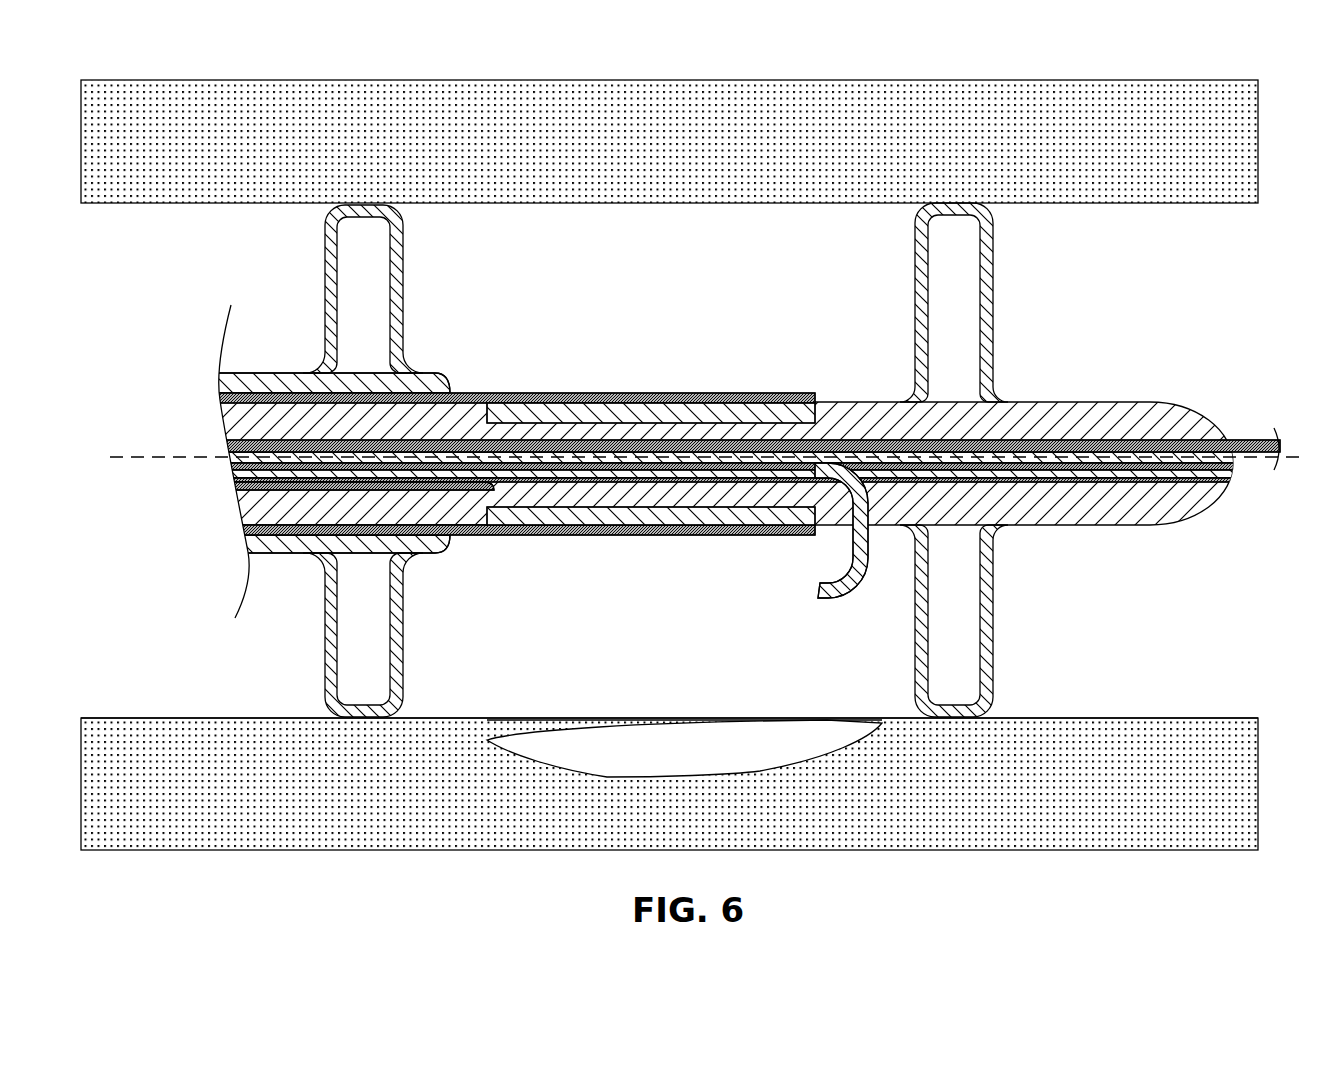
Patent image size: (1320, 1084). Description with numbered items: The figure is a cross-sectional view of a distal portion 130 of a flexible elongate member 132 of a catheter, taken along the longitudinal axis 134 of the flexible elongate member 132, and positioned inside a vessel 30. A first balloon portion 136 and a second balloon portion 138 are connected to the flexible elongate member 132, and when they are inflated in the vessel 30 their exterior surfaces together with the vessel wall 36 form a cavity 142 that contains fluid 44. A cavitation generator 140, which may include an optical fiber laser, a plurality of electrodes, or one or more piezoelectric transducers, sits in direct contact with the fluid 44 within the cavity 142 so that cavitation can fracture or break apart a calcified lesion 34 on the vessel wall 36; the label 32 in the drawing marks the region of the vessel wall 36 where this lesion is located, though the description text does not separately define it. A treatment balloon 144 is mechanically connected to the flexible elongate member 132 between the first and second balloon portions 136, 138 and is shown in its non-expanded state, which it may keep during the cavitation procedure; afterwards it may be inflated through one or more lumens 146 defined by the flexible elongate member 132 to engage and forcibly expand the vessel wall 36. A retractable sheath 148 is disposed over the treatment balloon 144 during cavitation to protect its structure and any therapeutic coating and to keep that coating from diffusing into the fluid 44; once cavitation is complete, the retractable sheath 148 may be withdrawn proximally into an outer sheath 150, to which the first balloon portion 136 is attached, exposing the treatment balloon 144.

The vessel 30 is at (128, 737).
The bond region 32 is at (542, 693).
The calcified lesion 34 is at (714, 759).
The vessel wall 36 is at (230, 702).
The fluid 44 is at (633, 594).
The distal portion 130 is at (657, 460).
The flexible elongate member 132 is at (1102, 390).
The longitudinal axis 134 is at (128, 456).
The first balloon portion 136 is at (335, 257).
The second balloon portion 138 is at (925, 272).
The cavitation generator 140 is at (828, 573).
The cavity 142 is at (542, 280).
The treatment balloon 144 is at (698, 412).
The lumen 146 is at (224, 490).
The retractable sheath 148 is at (515, 400).
The outer sheath 150 is at (240, 381).